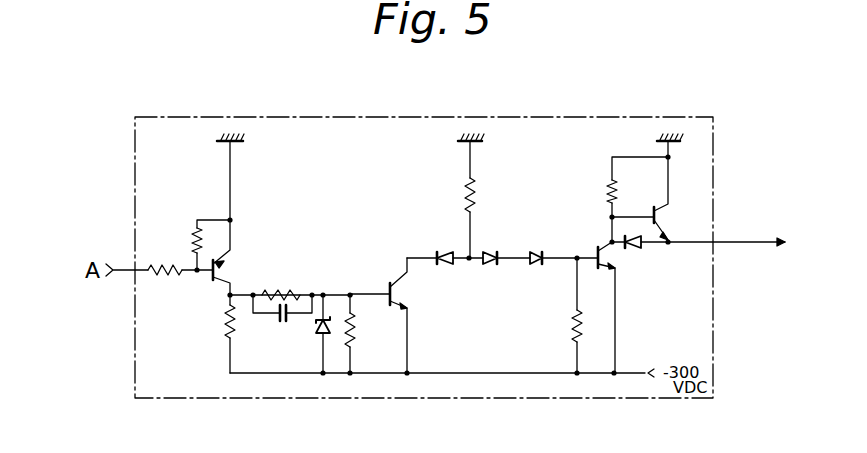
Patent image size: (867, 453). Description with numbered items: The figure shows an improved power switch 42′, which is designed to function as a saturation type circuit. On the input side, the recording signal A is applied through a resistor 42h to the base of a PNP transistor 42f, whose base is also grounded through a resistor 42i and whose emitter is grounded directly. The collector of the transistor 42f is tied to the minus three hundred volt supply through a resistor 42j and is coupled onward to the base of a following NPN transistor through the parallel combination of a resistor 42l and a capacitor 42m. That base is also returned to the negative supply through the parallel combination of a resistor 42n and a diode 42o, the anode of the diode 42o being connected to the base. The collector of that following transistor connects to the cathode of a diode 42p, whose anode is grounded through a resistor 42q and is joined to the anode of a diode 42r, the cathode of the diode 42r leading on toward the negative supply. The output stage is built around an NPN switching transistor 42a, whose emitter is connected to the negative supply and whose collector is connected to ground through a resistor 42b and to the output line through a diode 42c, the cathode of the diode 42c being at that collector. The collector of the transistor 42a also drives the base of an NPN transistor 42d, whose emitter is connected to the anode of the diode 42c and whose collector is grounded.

The switch 42′ is at (290, 116).
The resistor 42h is at (165, 279).
The resistor 42i is at (190, 236).
The PNP transistor 42f is at (222, 250).
The resistor 42j is at (222, 328).
The resistor 42l is at (297, 289).
The capacitor 42m is at (283, 320).
The diode 42o is at (320, 333).
The resistor 42n is at (356, 328).
The diode 42p is at (441, 268).
The diode 42r is at (493, 268).
The resistor 42q is at (478, 192).
The NPN switching transistor 42a is at (614, 266).
The resistor 42b is at (606, 193).
The NPN transistor 42d is at (672, 218).
The diode 42c is at (646, 248).